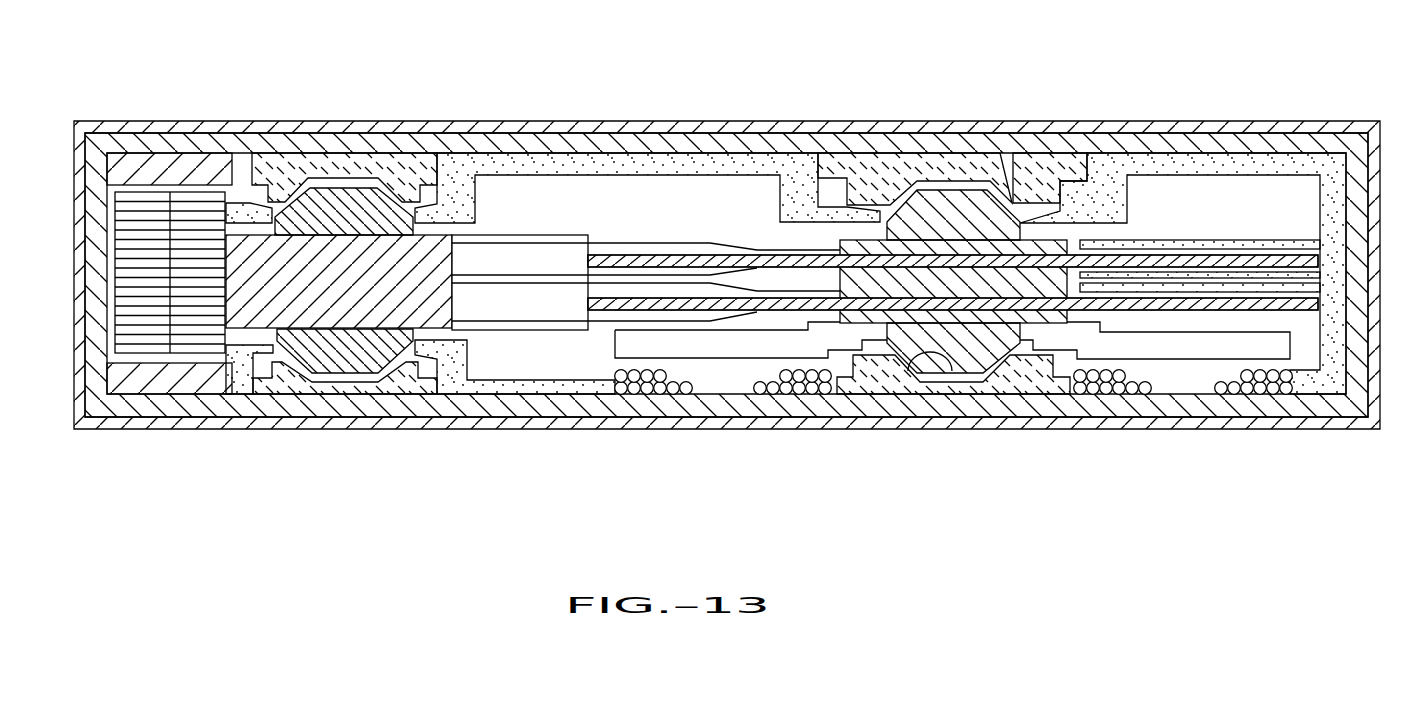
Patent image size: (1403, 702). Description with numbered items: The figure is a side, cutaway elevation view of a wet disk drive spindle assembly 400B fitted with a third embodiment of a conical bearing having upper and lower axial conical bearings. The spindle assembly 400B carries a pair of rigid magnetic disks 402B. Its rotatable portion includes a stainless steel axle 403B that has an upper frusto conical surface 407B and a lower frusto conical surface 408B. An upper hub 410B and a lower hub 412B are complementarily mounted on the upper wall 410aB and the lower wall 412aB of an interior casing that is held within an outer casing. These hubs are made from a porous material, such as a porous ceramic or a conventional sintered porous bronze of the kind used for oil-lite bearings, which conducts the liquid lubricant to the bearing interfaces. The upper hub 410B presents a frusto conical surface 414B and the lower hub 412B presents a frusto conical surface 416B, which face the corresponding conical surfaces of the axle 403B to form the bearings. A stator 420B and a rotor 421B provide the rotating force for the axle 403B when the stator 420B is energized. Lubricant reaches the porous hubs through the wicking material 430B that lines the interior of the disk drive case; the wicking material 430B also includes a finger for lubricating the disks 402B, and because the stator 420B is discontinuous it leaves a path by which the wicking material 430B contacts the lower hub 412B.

The spindle assembly 400B is at (785, 236).
The rigid magnetic disks 402B is at (763, 267).
The stainless steel axle 403B is at (897, 227).
The upper frusto conical surface 407B is at (1000, 201).
The lower frusto conical surface 408B is at (945, 372).
The upper hub 410B is at (1046, 172).
The upper wall 410aB is at (1082, 143).
The lower hub 412B is at (860, 380).
The lower wall 412aB is at (830, 407).
The frusto conical surface 414B is at (1010, 165).
The frusto conical surface 416B is at (920, 368).
The stator 420B is at (1107, 397).
The rotor 421B is at (1187, 345).
The wicking material 430B is at (800, 185).